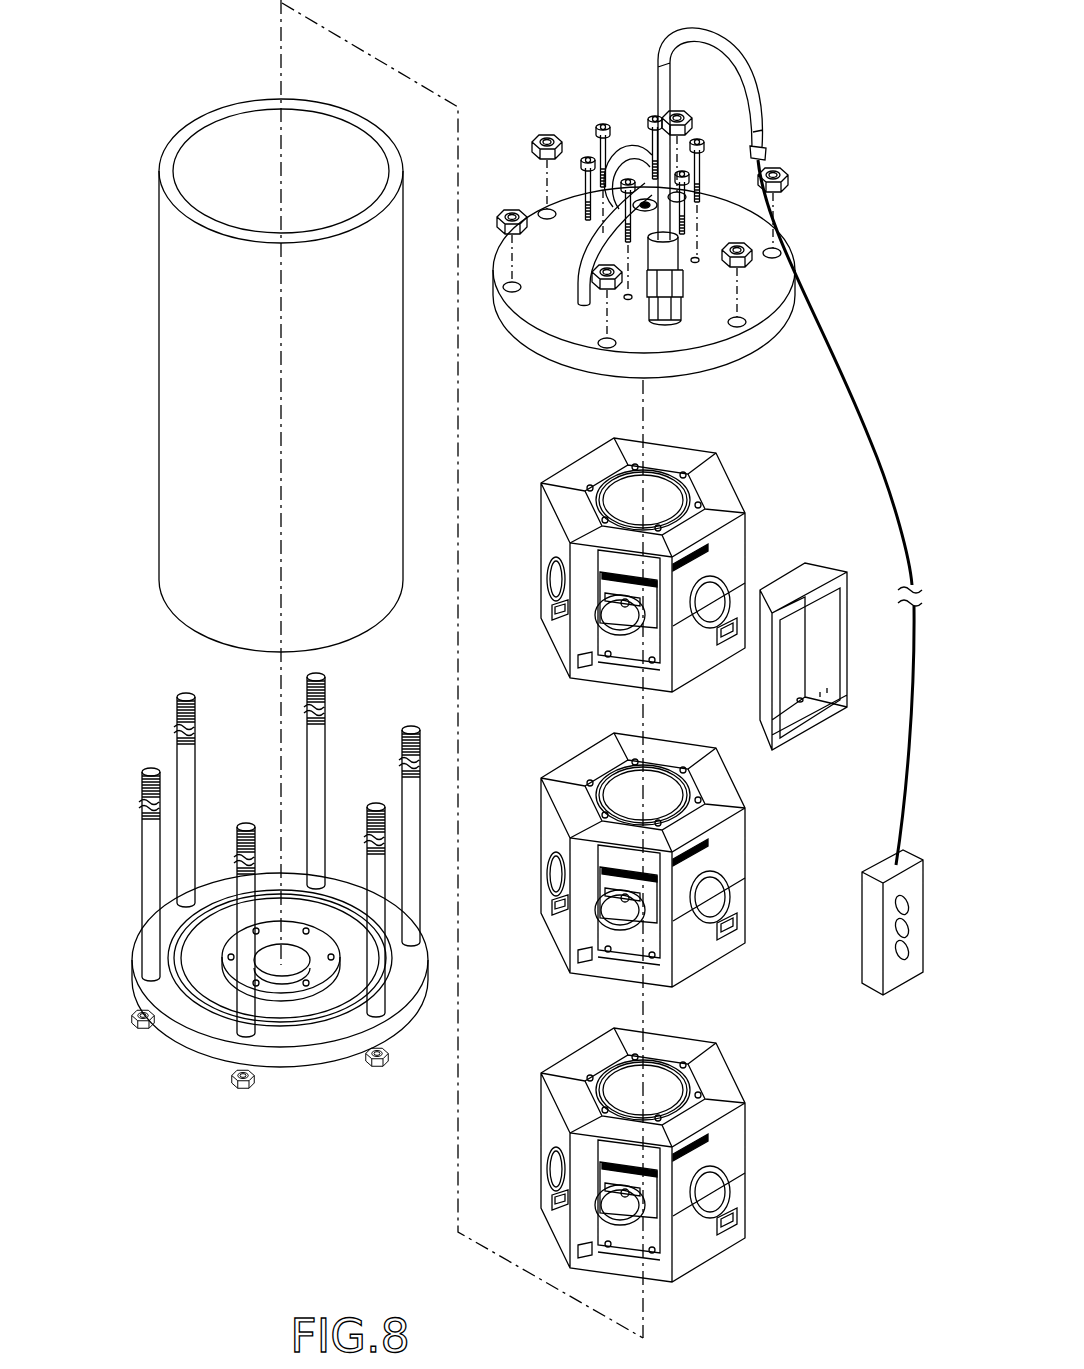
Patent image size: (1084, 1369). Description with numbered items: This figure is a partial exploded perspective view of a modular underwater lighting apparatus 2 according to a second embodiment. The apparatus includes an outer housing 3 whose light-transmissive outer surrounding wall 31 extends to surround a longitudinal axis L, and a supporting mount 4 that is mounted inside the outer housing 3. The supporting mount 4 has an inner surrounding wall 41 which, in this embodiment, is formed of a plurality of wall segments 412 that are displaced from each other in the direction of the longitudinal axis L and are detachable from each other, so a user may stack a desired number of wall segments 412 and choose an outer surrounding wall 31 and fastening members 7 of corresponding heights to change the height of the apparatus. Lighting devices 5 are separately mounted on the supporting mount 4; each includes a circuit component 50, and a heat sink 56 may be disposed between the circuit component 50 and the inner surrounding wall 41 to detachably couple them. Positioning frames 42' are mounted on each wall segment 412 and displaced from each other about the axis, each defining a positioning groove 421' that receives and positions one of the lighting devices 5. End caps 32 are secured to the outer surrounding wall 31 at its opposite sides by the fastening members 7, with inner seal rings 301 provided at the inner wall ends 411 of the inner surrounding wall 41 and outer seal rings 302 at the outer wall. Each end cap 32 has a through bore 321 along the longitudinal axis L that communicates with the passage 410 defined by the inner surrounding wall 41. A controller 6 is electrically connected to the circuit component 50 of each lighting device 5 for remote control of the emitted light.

The modular underwater lighting apparatus 2 is at (522, 112).
The outer housing 3 is at (182, 100).
The supporting mount 4 is at (588, 447).
The lighting devices 5 is at (608, 640).
The controller 6 is at (908, 972).
The fastening members 7 is at (178, 760).
The outer surrounding wall 31 is at (200, 470).
The end caps 32 is at (177, 1040).
The inner surrounding wall 41 is at (500, 503).
The positioning frames 42' is at (821, 596).
The circuit component 50 is at (707, 562).
The heat sink 56 is at (597, 550).
The inner seal rings 301 is at (283, 968).
The outer seal rings 302 is at (220, 1018).
The through bore 321 is at (315, 995).
The passage 410 is at (612, 503).
The inner wall ends 411 is at (662, 467).
The wall segments 412 is at (597, 510).
The positioning groove 421' is at (844, 663).
The longitudinal axis L is at (277, 693).